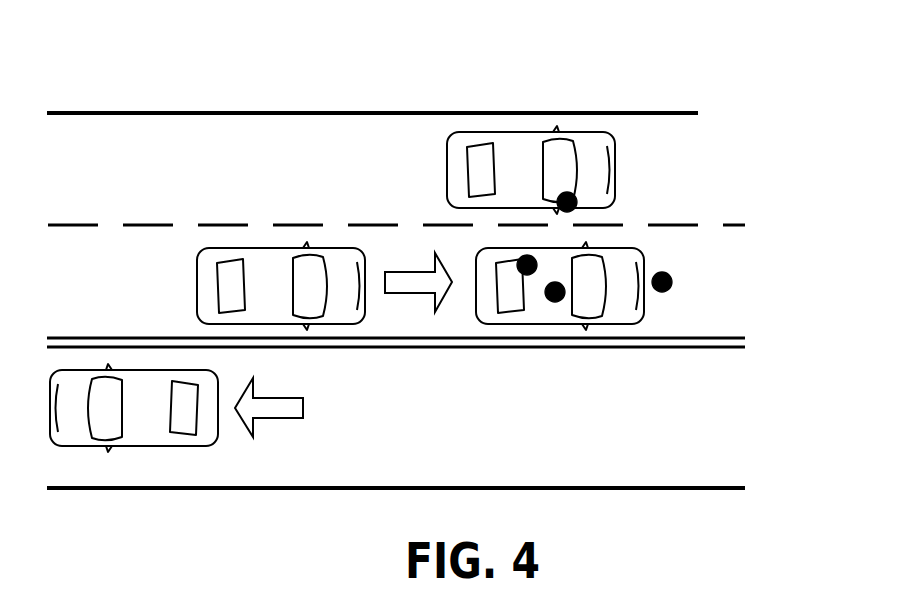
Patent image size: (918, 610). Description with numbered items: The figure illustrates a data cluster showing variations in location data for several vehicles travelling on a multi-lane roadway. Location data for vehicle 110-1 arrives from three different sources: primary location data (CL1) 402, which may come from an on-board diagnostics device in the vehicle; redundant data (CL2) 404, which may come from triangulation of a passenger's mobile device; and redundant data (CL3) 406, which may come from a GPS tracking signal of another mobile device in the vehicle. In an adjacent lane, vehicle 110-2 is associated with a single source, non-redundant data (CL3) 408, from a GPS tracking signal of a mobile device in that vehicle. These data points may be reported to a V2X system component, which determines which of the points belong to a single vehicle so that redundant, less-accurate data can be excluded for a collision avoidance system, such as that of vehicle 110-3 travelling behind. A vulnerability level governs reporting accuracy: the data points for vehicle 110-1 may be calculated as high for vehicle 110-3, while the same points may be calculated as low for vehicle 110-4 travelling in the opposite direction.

The vehicle 110-1 is at (643, 312).
The vehicle 110-2 is at (450, 143).
The vehicle 110-3 is at (272, 250).
The vehicle 110-4 is at (150, 447).
The primary location data (CL1) 402 is at (556, 300).
The redundant data (CL2) 404 is at (522, 273).
The redundant data (CL3) 406 is at (669, 274).
The non-redundant data (CL3) 408 is at (571, 196).